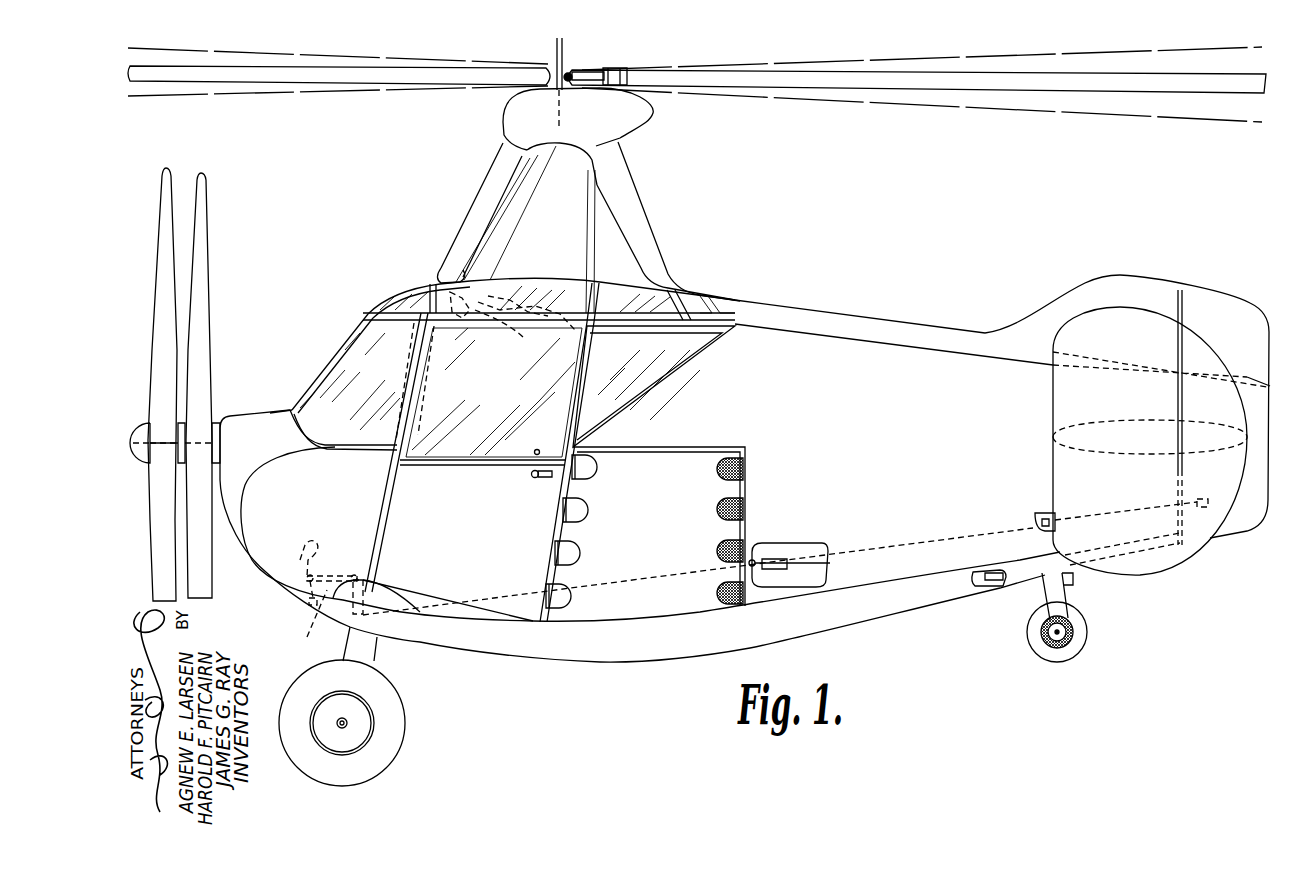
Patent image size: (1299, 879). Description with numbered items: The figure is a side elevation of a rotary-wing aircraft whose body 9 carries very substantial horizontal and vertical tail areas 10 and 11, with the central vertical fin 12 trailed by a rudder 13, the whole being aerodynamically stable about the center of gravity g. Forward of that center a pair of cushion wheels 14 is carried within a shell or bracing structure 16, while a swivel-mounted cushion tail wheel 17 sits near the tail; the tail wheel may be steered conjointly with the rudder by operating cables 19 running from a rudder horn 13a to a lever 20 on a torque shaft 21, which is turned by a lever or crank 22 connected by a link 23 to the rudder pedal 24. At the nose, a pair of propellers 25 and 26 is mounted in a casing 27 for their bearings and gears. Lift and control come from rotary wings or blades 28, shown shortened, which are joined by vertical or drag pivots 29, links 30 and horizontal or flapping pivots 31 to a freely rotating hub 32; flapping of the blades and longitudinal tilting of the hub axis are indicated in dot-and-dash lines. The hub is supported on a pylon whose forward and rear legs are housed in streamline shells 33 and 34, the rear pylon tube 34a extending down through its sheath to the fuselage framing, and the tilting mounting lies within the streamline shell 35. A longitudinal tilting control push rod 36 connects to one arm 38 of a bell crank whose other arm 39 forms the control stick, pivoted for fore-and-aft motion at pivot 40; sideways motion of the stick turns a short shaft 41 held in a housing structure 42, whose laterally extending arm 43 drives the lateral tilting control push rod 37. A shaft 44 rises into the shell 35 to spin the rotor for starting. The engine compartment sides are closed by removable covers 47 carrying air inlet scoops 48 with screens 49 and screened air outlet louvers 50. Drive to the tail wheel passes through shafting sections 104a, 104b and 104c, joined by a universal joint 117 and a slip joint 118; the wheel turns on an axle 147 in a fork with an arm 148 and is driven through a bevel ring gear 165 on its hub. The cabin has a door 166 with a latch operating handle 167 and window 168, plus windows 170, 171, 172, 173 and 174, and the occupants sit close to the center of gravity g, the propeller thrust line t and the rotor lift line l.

The body 9 is at (640, 481).
The horizontal tail area 10 is at (1077, 430).
The vertical tail area 11 is at (1150, 441).
The central vertical fin 12 is at (1085, 287).
The rudder 13 is at (1237, 313).
The rudder horn 13a is at (1206, 507).
The cushion wheels 14 is at (396, 737).
The shell or bracing structure 16 is at (376, 659).
The tail wheel 17 is at (1079, 643).
The operating cables 19 is at (917, 540).
The lever 20 is at (358, 613).
The torque shaft 21 is at (358, 580).
The lever or crank 22 is at (350, 576).
The link 23 is at (308, 626).
The rudder pedal 24 is at (306, 552).
The propeller 25 is at (208, 190).
The propeller 26 is at (168, 168).
The casing 27 is at (247, 422).
The rotary wings or blades 28 is at (286, 70).
The vertical or drag pivots 29 is at (617, 67).
The links 30 is at (593, 72).
The horizontal or flapping pivots 31 is at (570, 73).
The hub 32 is at (552, 95).
The forward pylon leg streamline shell 33 is at (467, 199).
The rear pylon leg streamline shell 34 is at (631, 211).
The rear pylon tube 34a is at (692, 300).
The streamline shell 35 is at (625, 126).
The longitudinal tilting control push rod 36 is at (540, 170).
The lateral tilting control push rod 37 is at (506, 243).
The bell crank arm 38 is at (437, 272).
The control stick 39 is at (431, 384).
The pivot 40 is at (396, 452).
The short shaft 41 is at (525, 337).
The bearings or housing structure 42 is at (475, 310).
The laterally extending arm 43 is at (490, 322).
The shaft 44 is at (588, 228).
The removable covers 47 is at (659, 526).
The air inlet scoops 48 is at (576, 550).
The screens 49 is at (548, 590).
The screened air outlet louvers 50 is at (722, 546).
The drive shafting section 104a is at (752, 557).
The drive shafting section 104b is at (980, 571).
The drive shafting section 104c is at (1013, 586).
The universal joint 117 is at (772, 570).
The slip joint 118 is at (990, 587).
The axle 147 is at (1070, 627).
The yoke arm 148 is at (1056, 595).
The bevel ring gear 165 is at (1060, 648).
The door 166 is at (471, 545).
The latch operating handle 167 is at (533, 480).
The window 168 is at (499, 452).
The window 170 is at (346, 362).
The window 171 is at (640, 380).
The window 172 is at (404, 300).
The window 173 is at (543, 288).
The window 174 is at (617, 292).
The rotor lift line l is at (555, 72).
The center of gravity g is at (534, 451).
The propeller thrust line t is at (818, 452).